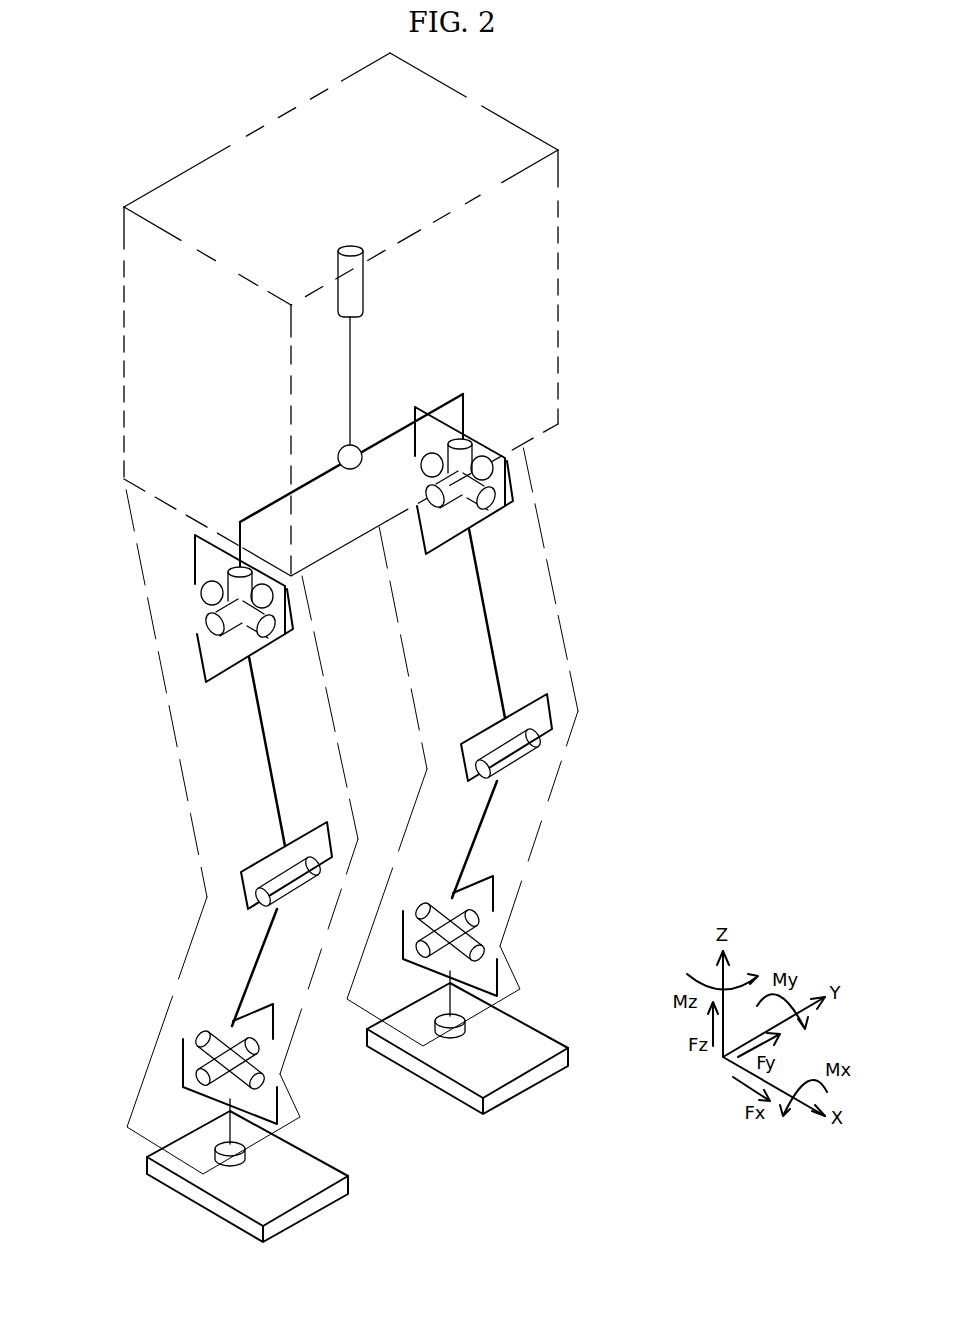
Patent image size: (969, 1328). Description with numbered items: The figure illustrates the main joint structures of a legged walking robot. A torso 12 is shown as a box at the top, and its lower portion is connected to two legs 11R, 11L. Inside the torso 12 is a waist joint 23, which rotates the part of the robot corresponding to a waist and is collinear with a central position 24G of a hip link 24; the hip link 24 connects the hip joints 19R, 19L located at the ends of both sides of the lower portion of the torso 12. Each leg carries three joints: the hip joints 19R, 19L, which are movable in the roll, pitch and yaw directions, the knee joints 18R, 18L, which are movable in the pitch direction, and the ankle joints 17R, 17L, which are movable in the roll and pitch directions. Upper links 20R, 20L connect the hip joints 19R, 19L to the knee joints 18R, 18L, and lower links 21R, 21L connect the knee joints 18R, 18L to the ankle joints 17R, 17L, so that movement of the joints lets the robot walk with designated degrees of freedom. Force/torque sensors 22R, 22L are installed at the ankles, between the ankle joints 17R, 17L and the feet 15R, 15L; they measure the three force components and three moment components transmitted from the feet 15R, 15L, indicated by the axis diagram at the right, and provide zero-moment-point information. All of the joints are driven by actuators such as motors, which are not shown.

The torso 12 is at (558, 312).
The waist joint 23 is at (342, 272).
The hip link 24 is at (393, 433).
The central position of hip link 24G is at (340, 454).
The right leg 11R is at (188, 801).
The left leg 11L is at (572, 683).
The right hip joint 19R is at (217, 593).
The left hip joint 19L is at (511, 480).
The right upper link 20R is at (257, 708).
The left upper link 20L is at (547, 623).
The right knee joint 18R is at (260, 881).
The left knee joint 18L is at (549, 737).
The right lower link 21R is at (257, 963).
The left lower link 21L is at (529, 839).
The right ankle joint 17R is at (207, 1058).
The left ankle joint 17L is at (495, 936).
The right force/torque sensor 22R is at (215, 1148).
The left force/torque sensor 22L is at (511, 1004).
The right foot 15R is at (317, 1205).
The left foot 15L is at (493, 1049).